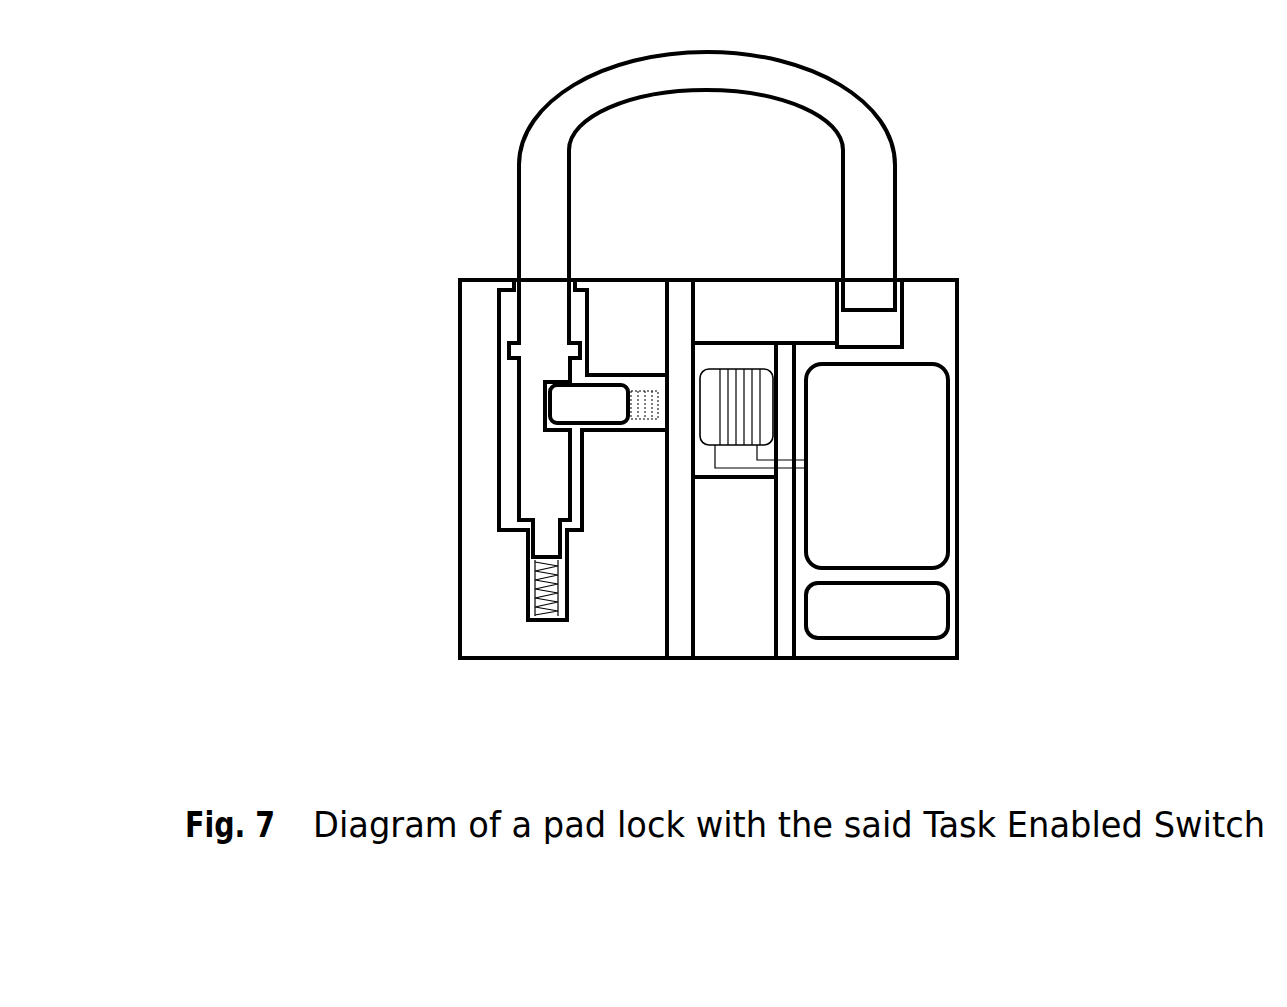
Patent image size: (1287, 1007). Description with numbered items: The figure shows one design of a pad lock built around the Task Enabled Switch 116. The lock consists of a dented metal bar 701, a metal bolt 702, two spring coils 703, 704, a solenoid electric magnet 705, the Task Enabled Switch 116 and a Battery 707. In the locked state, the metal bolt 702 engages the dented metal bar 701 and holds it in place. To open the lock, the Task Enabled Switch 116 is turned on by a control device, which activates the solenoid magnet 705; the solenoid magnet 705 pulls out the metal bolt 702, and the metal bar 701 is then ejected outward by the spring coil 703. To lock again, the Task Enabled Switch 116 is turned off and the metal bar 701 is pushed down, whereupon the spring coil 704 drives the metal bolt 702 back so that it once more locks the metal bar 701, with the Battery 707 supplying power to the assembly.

The dented metal bar 701 is at (580, 108).
The metal bolt 702 is at (593, 405).
The spring coil 703 is at (527, 592).
The spring coil 704 is at (653, 409).
The solenoid electric magnet 705 is at (738, 395).
The Task Enabled Switch 116 is at (880, 505).
The Battery 707 is at (872, 604).